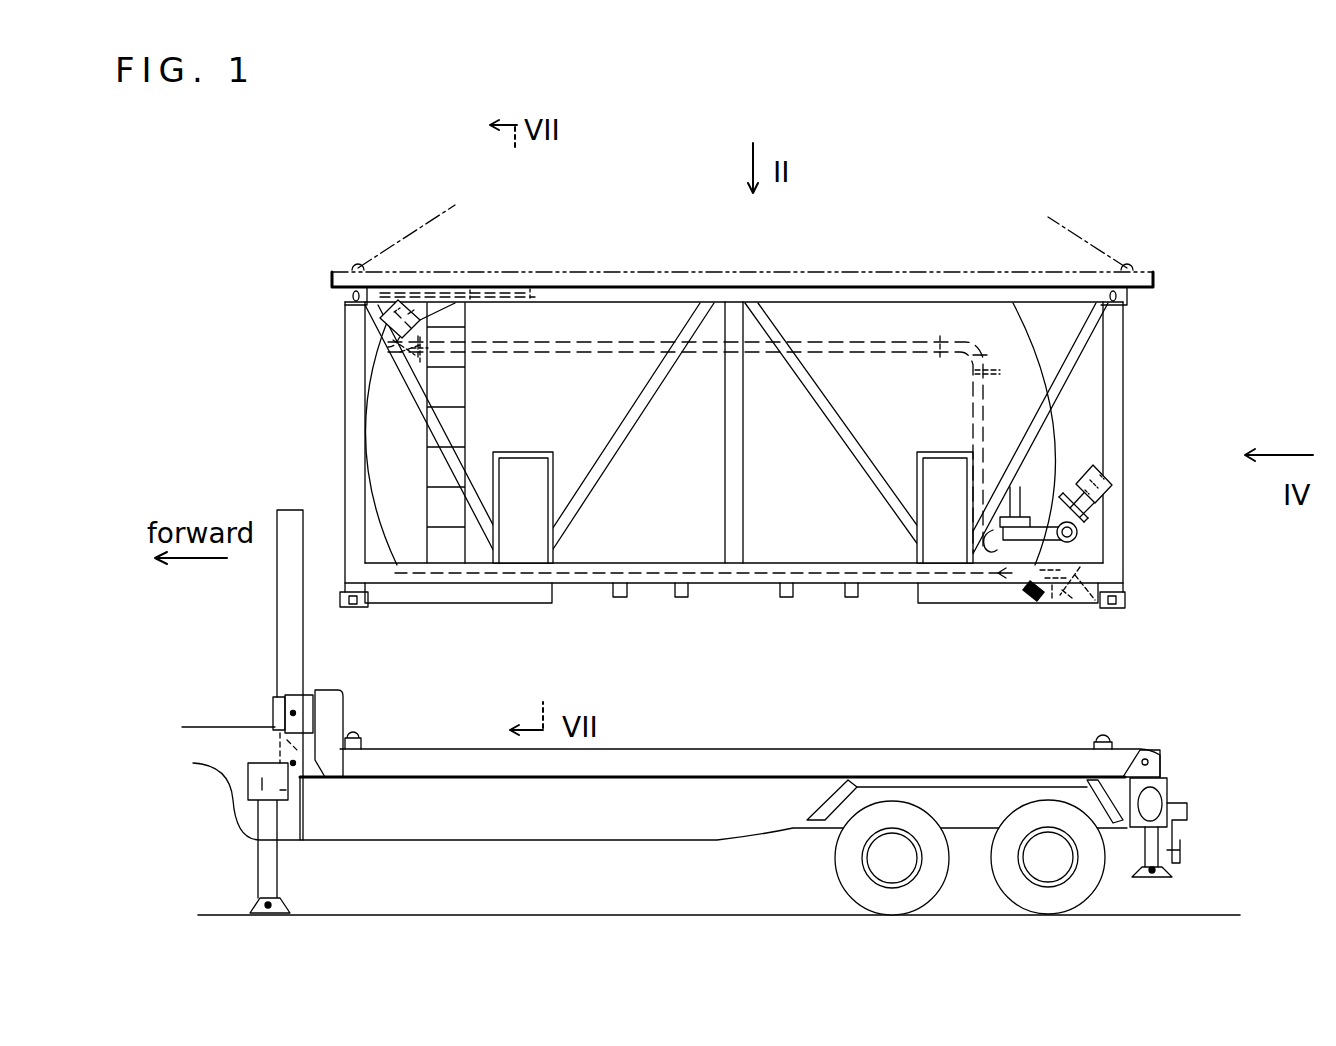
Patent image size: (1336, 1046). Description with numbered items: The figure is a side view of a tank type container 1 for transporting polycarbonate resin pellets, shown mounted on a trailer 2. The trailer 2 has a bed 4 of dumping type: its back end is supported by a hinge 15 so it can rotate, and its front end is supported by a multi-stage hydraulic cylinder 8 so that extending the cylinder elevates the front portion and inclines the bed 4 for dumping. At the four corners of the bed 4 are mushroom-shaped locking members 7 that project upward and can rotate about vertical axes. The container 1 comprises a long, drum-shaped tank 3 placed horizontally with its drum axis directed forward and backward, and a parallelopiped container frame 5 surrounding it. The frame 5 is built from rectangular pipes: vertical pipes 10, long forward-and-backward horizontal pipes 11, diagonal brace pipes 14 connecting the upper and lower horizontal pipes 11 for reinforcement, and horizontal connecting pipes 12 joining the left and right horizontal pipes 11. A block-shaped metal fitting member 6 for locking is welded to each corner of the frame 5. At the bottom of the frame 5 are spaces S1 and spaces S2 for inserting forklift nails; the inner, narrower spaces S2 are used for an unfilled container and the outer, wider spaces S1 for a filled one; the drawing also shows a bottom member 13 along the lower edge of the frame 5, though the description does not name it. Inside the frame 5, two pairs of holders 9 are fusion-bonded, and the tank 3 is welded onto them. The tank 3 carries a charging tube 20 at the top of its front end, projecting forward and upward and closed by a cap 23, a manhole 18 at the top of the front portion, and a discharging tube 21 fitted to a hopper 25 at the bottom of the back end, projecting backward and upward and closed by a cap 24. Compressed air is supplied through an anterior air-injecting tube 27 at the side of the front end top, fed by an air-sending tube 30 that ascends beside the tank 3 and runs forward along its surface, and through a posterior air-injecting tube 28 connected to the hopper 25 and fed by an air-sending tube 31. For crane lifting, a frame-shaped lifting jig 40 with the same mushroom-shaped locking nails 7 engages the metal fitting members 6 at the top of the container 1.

The tank type container 1 is at (1224, 286).
The trailer 2 is at (1224, 770).
The tank 3 is at (826, 326).
The bed 4 is at (735, 768).
The container frame 5 is at (1135, 344).
The metal fitting member 6 is at (343, 294).
The locking member 7 is at (360, 737).
The hydraulic cylinder 8 is at (277, 616).
The holder 9 is at (536, 452).
The vertical pipe 10 is at (346, 436).
The horizontal pipe 11 is at (910, 298).
The horizontal connecting pipe 12 is at (620, 600).
The skid 13 is at (466, 595).
The diagonal brace pipe 14 is at (632, 433).
The hinge 15 is at (1160, 752).
The manhole 18 is at (500, 283).
The charging tube 20 is at (415, 303).
The discharging tube 21 is at (1090, 525).
The cap 23 is at (370, 322).
The cap 24 is at (1085, 450).
The hopper 25 is at (1012, 607).
The anterior air-injecting tube 27 is at (385, 383).
The posterior air-injecting tube 28 is at (1042, 607).
The air-sending tube 30 is at (630, 340).
The air-sending tube 31 is at (1083, 610).
The lifting jig 40 is at (1012, 275).
The space S1 is at (593, 600).
The space S2 is at (660, 600).